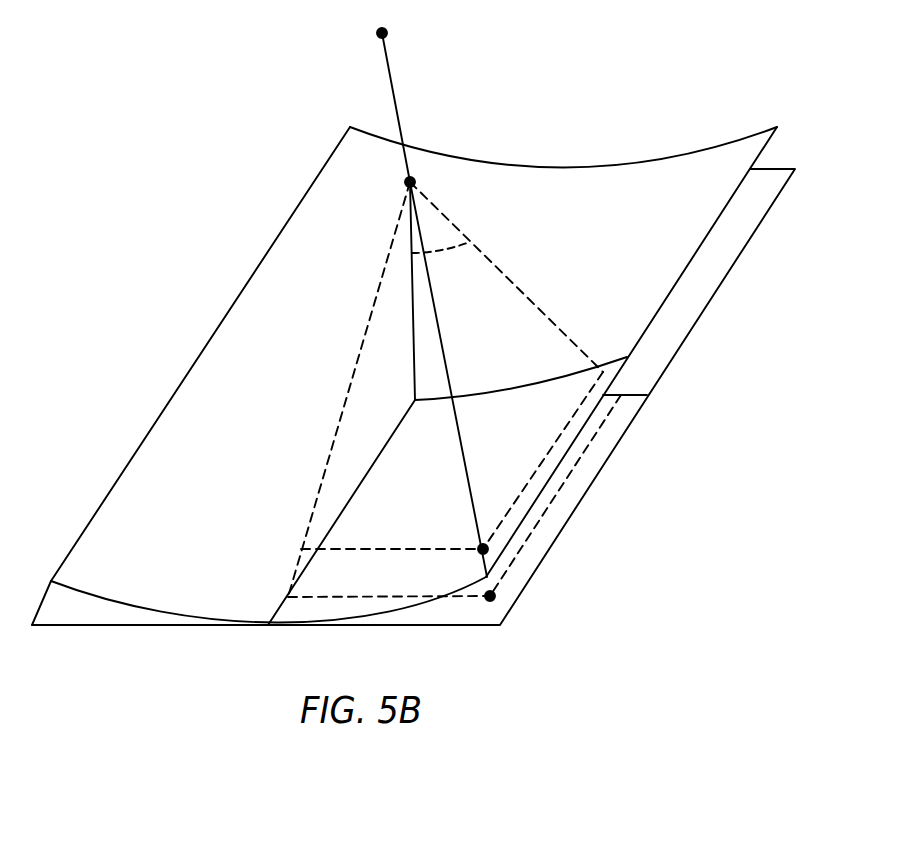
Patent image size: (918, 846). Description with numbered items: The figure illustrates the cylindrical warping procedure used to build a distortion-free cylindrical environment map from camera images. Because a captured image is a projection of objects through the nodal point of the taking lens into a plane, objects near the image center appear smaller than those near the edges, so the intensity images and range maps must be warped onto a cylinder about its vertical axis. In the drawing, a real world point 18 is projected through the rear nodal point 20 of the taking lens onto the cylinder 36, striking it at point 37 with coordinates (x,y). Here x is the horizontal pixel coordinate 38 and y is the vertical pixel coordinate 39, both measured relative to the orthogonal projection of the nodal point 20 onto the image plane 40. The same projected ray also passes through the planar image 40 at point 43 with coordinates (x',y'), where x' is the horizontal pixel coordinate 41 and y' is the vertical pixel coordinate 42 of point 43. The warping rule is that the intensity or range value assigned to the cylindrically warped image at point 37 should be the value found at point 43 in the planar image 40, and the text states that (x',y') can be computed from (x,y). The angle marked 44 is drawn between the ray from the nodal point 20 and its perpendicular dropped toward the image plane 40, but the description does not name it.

The real world point 18 is at (386, 31).
The rear nodal point 20 is at (413, 180).
The cylinder 36 is at (723, 180).
The image plane 40 is at (737, 233).
The angle of incidence 44 is at (453, 250).
The vertical pixel coordinate 39 is at (557, 437).
The vertical pixel coordinate 42 is at (577, 466).
The horizontal pixel coordinate 38 is at (381, 551).
The horizontal pixel coordinate 41 is at (317, 597).
The point (x,y) on cylinder 37 is at (488, 549).
The point (x',y') in planar image 43 is at (493, 599).